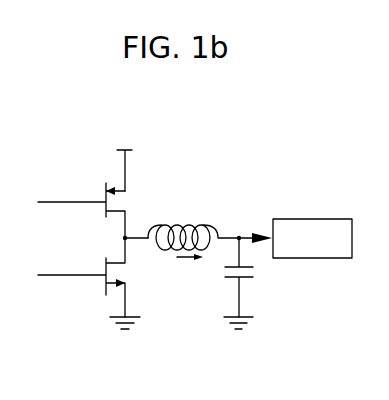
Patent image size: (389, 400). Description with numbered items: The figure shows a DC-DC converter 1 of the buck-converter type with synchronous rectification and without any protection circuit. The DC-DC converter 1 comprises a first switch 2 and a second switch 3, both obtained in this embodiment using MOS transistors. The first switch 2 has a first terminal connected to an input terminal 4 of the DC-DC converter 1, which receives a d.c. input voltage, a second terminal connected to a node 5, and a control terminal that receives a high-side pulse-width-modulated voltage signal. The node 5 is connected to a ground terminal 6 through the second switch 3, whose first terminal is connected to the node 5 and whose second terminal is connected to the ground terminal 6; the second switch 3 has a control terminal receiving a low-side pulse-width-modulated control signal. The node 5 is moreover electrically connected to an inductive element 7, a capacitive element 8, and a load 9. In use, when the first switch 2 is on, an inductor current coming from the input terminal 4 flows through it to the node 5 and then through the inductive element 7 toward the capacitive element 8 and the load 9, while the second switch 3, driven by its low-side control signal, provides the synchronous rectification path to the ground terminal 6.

The DC-DC converter 1 is at (72, 100).
The first switch 2 is at (107, 188).
The second switch 3 is at (106, 296).
The input terminal 4 is at (136, 128).
The node 5 is at (117, 245).
The ground terminal 6 is at (118, 328).
The inductive element 7 is at (198, 222).
The capacitive element 8 is at (252, 279).
The load 9 is at (335, 219).